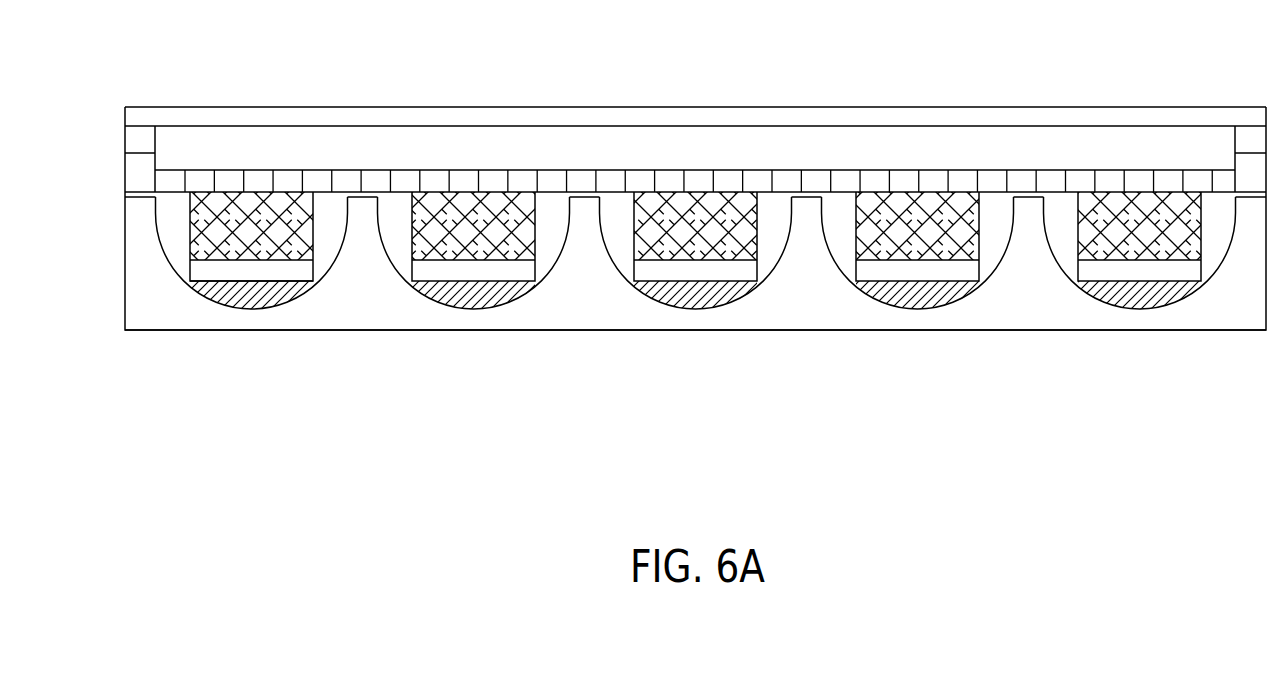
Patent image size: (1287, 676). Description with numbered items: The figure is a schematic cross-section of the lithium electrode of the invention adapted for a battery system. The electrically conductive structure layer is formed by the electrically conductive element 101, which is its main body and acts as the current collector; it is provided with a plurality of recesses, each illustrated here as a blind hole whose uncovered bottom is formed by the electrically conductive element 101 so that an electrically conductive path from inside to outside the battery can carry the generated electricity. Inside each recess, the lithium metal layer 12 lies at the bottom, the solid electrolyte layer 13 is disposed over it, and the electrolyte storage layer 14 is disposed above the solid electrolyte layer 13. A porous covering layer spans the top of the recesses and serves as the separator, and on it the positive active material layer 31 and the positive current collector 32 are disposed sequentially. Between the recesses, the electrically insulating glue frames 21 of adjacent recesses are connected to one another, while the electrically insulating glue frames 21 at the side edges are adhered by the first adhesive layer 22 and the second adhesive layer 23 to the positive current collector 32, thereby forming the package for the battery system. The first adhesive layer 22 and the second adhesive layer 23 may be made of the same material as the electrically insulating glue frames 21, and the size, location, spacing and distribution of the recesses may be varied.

The electrically conductive element 101 is at (378, 310).
The lithium metal layer 12 is at (237, 307).
The solid electrolyte layer 13 is at (200, 273).
The electrolyte storage layer 14 is at (735, 240).
The electrically insulating glue frame 21 is at (170, 215).
The first adhesive layer 22 is at (127, 180).
The second adhesive layer 23 is at (137, 143).
The positive active material layer 31 is at (798, 145).
The positive current collector 32 is at (449, 107).